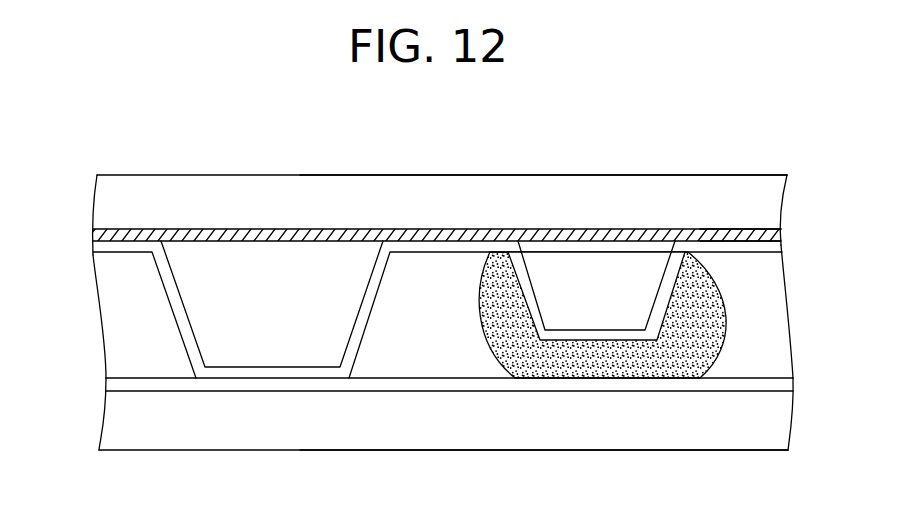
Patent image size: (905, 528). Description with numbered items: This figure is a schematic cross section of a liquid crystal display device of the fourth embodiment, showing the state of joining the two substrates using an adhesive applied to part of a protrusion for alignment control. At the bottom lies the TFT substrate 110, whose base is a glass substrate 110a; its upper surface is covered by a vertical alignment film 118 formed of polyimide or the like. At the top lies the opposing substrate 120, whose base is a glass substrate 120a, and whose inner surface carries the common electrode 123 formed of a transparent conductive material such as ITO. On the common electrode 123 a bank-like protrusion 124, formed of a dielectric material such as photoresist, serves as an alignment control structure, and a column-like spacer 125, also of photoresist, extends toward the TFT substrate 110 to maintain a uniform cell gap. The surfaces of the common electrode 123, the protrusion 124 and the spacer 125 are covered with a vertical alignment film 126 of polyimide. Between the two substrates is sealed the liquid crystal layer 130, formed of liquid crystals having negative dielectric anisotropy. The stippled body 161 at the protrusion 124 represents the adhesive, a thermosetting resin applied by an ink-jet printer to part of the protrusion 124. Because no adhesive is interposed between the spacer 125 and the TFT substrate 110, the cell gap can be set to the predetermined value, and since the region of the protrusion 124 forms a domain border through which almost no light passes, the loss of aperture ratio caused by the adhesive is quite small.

The TFT substrate 110 is at (83, 380).
The glass substrate 110a is at (718, 435).
The vertical alignment film 118 is at (765, 378).
The opposing substrate 120 is at (83, 175).
The glass substrate 120a is at (763, 183).
The common electrode 123 is at (781, 234).
The protrusion 124 is at (597, 258).
The spacer 125 is at (316, 258).
The vertical alignment film 126 is at (357, 346).
The liquid crystal layer 130 is at (118, 310).
The filling material 161 is at (483, 283).